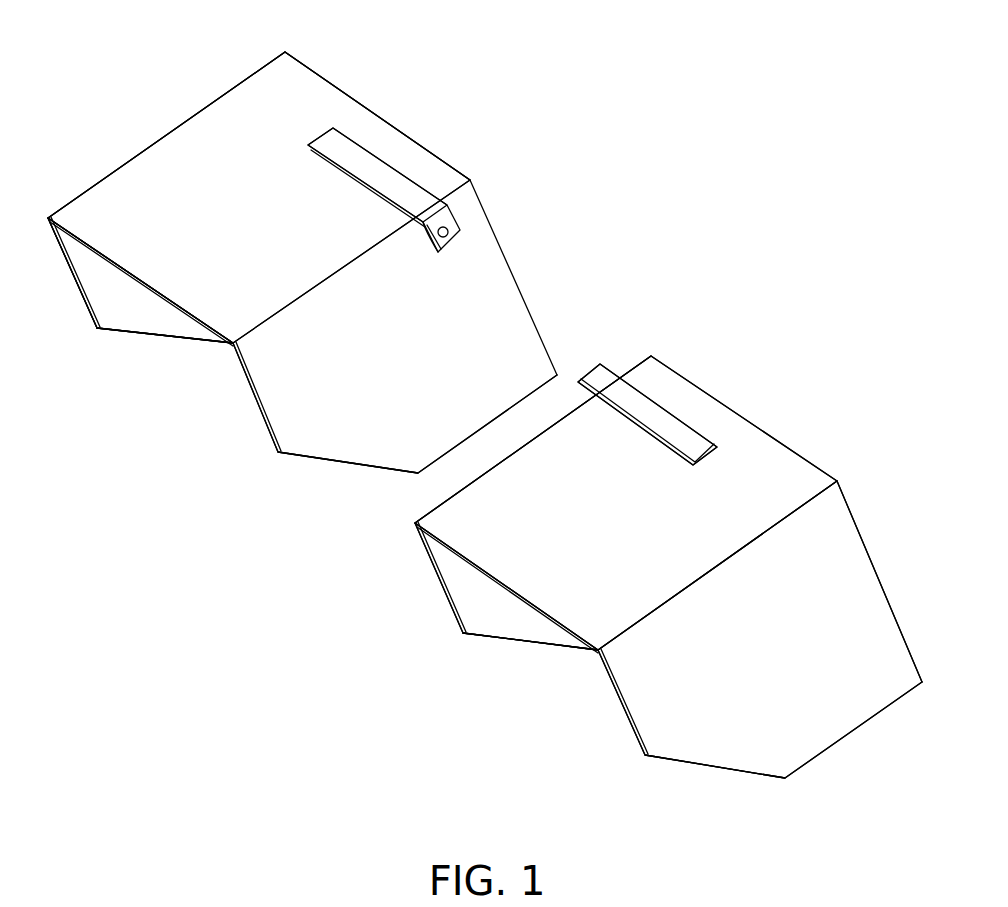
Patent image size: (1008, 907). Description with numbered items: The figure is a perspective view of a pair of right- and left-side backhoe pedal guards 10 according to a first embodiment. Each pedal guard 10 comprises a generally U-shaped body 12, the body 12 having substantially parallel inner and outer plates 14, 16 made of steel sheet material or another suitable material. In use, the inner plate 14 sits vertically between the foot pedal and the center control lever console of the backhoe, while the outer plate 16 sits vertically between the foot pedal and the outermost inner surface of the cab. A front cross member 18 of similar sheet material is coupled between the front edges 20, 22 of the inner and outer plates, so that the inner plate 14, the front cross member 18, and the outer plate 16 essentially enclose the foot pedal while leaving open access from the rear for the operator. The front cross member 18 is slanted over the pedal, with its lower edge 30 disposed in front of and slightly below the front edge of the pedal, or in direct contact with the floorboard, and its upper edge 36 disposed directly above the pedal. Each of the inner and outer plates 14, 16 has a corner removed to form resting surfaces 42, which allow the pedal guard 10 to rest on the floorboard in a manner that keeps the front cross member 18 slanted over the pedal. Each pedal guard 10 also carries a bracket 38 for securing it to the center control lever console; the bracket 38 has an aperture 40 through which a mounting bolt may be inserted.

The pedal guard 10 is at (522, 115).
The body 12 is at (160, 130).
The inner plate 14 is at (393, 448).
The outer plate 16 is at (90, 278).
The front cross member 18 is at (157, 272).
The front edge of the inner plate 20 is at (285, 298).
The front edge of the outer plate 22 is at (127, 192).
The lower edge 30 is at (152, 302).
The upper edge 36 is at (382, 117).
The bracket 38 is at (422, 205).
The aperture 40 is at (450, 233).
The resting surfaces 42 is at (172, 342).